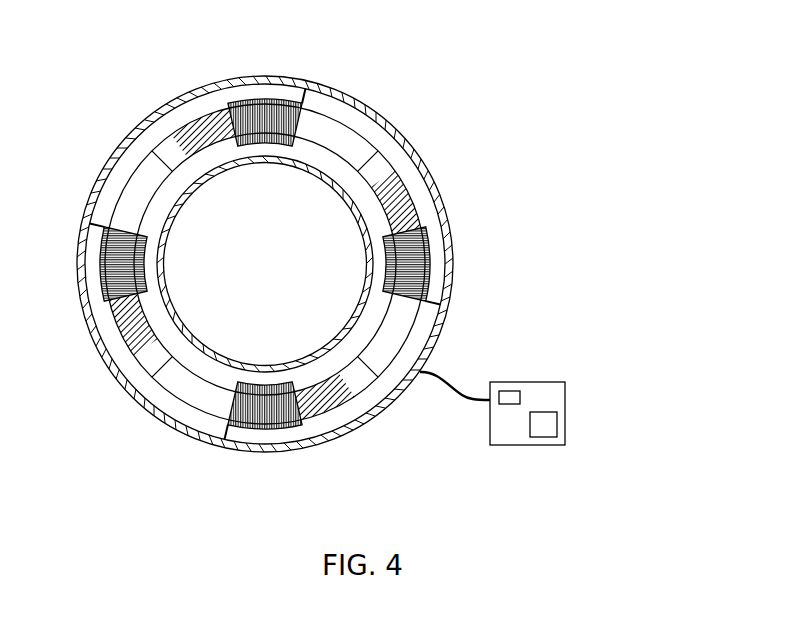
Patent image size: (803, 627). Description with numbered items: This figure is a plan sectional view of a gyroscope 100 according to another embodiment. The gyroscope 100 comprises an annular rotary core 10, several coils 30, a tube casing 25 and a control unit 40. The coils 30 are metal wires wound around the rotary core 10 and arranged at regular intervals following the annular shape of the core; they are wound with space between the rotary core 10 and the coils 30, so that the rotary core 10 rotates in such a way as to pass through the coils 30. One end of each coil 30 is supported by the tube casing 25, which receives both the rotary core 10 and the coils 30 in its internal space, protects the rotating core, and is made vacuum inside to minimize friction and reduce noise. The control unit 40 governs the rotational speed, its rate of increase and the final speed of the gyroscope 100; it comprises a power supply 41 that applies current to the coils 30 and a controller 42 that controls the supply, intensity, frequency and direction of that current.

The gyroscope 100 is at (137, 167).
The tube casing 25 is at (372, 112).
The rotary core 10 is at (405, 188).
The coils 30 is at (278, 103).
The control unit 40 is at (565, 399).
The power supply 41 is at (520, 400).
The controller 42 is at (557, 422).